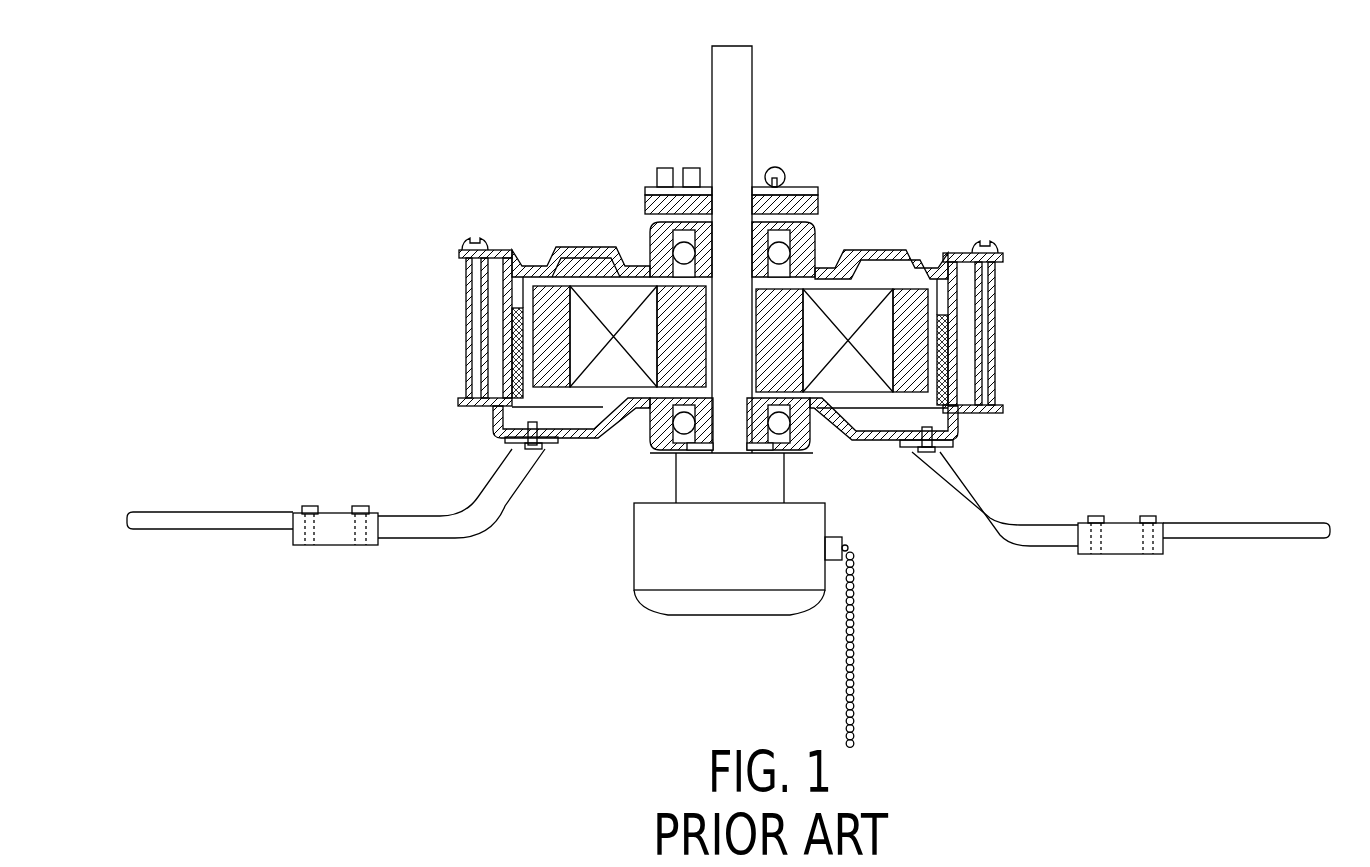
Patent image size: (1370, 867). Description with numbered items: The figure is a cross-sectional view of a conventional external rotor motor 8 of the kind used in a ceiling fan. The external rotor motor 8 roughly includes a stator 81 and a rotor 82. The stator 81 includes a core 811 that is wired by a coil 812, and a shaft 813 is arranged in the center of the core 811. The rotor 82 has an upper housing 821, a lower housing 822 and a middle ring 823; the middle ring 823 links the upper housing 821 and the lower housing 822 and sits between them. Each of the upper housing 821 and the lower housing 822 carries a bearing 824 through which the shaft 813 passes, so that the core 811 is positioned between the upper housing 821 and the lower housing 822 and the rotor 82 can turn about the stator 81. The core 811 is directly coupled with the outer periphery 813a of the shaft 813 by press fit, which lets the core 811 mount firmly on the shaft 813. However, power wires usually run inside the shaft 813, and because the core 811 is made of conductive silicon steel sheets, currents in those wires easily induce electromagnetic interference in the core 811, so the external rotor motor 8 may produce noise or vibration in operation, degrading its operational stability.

The external rotor motor 8 is at (1025, 152).
The stator 81 is at (888, 420).
The core 811 is at (920, 298).
The coil 812 is at (858, 300).
The shaft 813 is at (745, 67).
The outer periphery 813a is at (690, 290).
The rotor 82 is at (525, 228).
The upper housing 821 is at (588, 247).
The lower housing 822 is at (572, 440).
The middle ring 823 is at (507, 292).
The bearing 824 is at (655, 235).